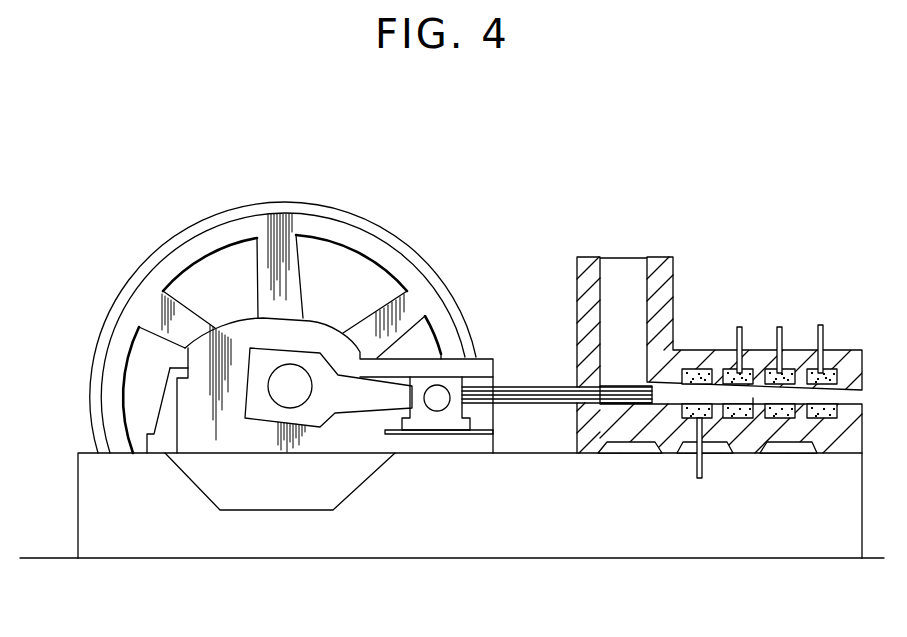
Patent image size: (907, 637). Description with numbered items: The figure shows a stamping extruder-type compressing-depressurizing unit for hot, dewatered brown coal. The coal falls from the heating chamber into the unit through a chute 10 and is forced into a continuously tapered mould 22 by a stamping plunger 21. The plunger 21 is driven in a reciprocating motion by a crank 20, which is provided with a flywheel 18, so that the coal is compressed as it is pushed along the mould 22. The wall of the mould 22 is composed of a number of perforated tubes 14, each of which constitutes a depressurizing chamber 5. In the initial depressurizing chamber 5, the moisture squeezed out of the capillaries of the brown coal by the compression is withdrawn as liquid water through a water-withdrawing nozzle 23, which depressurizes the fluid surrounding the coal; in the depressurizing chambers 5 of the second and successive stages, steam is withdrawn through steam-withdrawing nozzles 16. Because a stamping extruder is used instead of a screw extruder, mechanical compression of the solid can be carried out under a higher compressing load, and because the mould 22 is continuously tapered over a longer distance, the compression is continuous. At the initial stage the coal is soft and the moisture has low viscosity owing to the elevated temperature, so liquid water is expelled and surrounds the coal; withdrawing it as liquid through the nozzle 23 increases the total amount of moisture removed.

The depressurizing chamber 5 is at (753, 399).
The chute 10 is at (612, 273).
The perforated tubes 14 is at (693, 370).
The steam-withdrawing nozzles 16 is at (745, 343).
The flywheel 18 is at (111, 308).
The crank 20 is at (318, 350).
The stamping plunger 21 is at (521, 406).
The continuously tapered mould 22 is at (668, 398).
The water-withdrawing nozzle 23 is at (703, 468).